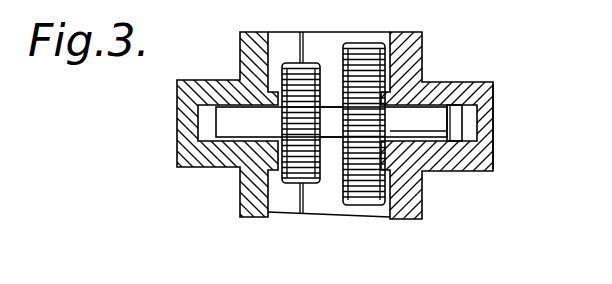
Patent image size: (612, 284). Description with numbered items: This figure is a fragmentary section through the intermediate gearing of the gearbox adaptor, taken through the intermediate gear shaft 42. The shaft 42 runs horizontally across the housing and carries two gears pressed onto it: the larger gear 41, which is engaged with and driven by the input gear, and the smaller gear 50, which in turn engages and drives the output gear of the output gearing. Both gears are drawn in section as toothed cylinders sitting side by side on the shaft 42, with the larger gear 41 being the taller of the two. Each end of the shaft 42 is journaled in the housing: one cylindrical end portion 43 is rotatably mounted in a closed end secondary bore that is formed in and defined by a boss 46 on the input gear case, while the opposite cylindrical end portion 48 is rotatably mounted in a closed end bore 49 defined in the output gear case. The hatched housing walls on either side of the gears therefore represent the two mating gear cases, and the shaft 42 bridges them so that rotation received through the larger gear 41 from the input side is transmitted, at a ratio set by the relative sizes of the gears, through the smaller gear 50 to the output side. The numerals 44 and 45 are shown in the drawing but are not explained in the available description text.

The larger gear 41 is at (368, 196).
The intermediate gear shaft 42 is at (337, 135).
The cylindrical end portion 43 is at (430, 117).
The housing right flange 44 is at (433, 172).
The gear assembly 45 is at (382, 32).
The boss 46 is at (494, 118).
The opposite cylindrical end portion 48 is at (232, 117).
The closed end bore 49 is at (223, 143).
The smaller gear 50 is at (298, 174).